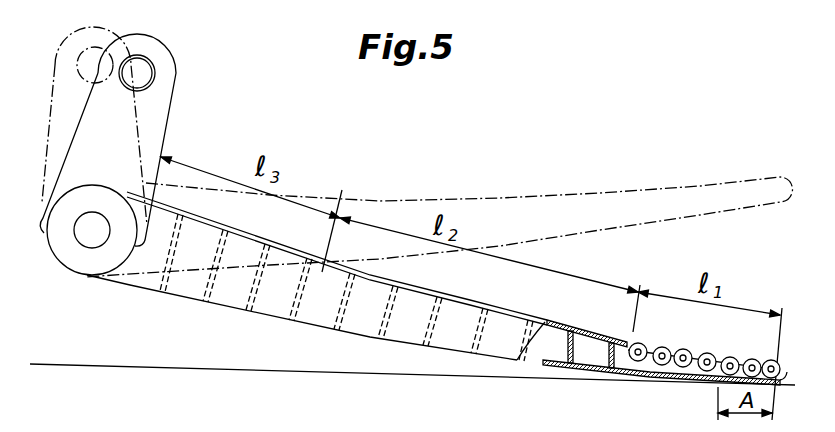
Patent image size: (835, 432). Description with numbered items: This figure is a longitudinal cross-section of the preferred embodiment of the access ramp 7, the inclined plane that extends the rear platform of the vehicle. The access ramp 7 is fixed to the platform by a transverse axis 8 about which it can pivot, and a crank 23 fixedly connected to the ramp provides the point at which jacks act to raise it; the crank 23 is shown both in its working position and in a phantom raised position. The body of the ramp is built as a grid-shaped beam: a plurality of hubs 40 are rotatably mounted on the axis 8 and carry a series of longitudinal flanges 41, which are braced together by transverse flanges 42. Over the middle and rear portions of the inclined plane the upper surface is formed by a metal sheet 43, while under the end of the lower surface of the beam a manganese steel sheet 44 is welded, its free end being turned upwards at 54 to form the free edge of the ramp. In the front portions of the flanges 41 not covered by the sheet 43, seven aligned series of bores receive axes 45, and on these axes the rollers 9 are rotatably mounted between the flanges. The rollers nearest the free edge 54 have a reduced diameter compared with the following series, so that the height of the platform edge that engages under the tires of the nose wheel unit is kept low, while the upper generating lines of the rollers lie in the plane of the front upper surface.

The crank 23 is at (165, 118).
The transverse axis 8 is at (88, 242).
The hub 40 is at (113, 262).
The longitudinal flange 41 is at (360, 328).
The access ramp 7 is at (498, 302).
The metal sheet 43 is at (547, 318).
The transverse flange 42 is at (578, 353).
The manganese steel sheet 44 is at (670, 377).
The axis 45 is at (644, 345).
The roller 9 is at (685, 350).
The upturned free end 54 is at (783, 378).